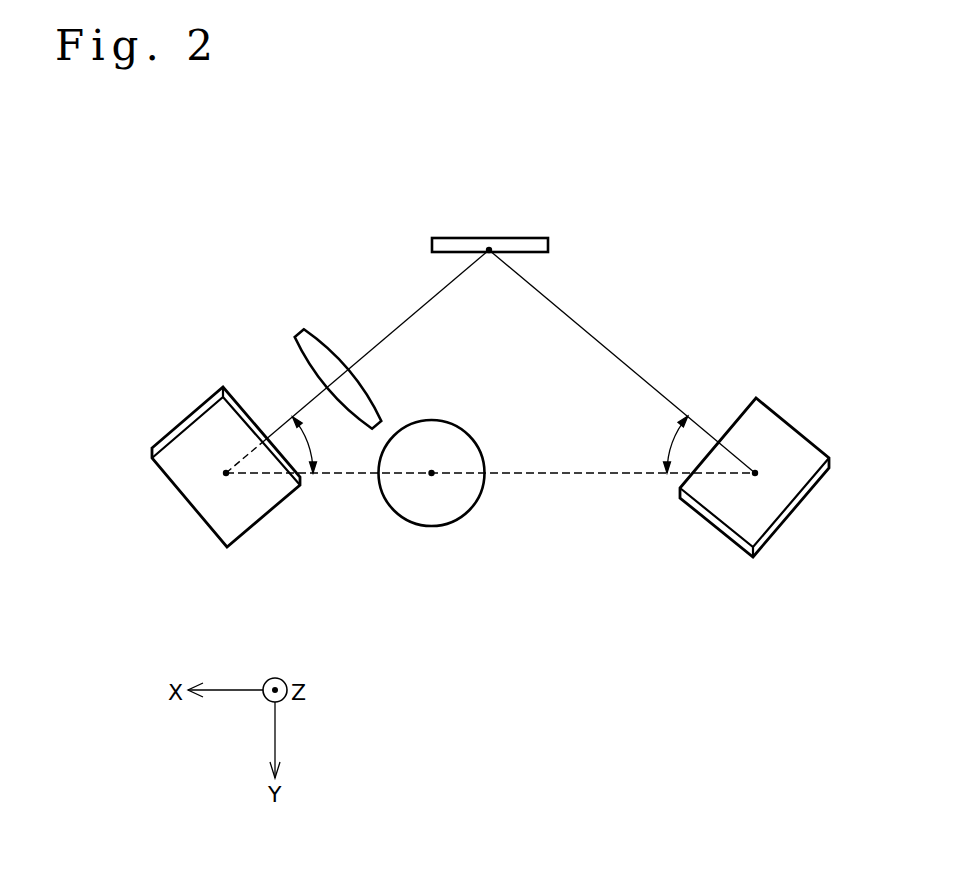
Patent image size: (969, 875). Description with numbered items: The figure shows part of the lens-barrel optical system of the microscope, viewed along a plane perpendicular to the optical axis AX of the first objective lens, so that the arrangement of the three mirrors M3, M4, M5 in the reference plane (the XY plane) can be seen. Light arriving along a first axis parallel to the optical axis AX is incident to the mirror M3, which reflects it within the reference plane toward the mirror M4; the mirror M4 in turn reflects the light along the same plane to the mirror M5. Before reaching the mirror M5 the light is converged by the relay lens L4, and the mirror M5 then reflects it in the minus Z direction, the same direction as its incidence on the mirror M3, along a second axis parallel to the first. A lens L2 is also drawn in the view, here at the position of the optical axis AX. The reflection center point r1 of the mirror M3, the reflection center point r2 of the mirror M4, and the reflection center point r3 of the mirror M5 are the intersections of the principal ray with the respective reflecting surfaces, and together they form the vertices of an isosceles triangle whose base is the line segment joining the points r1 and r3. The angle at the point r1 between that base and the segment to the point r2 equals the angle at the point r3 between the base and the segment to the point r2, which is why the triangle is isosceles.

The mirror (first reflecting member) M3 is at (795, 422).
The mirror (second reflecting member) M4 is at (520, 238).
The mirror (third reflecting member) M5 is at (165, 483).
The lens L2 is at (428, 527).
The relay lens L4 is at (303, 327).
The reflection center point of the mirror M3 r1 is at (757, 476).
The reflection center point of the mirror M4 r2 is at (489, 248).
The reflection center point of the mirror M5 r3 is at (226, 476).
The optical axis AX is at (430, 477).